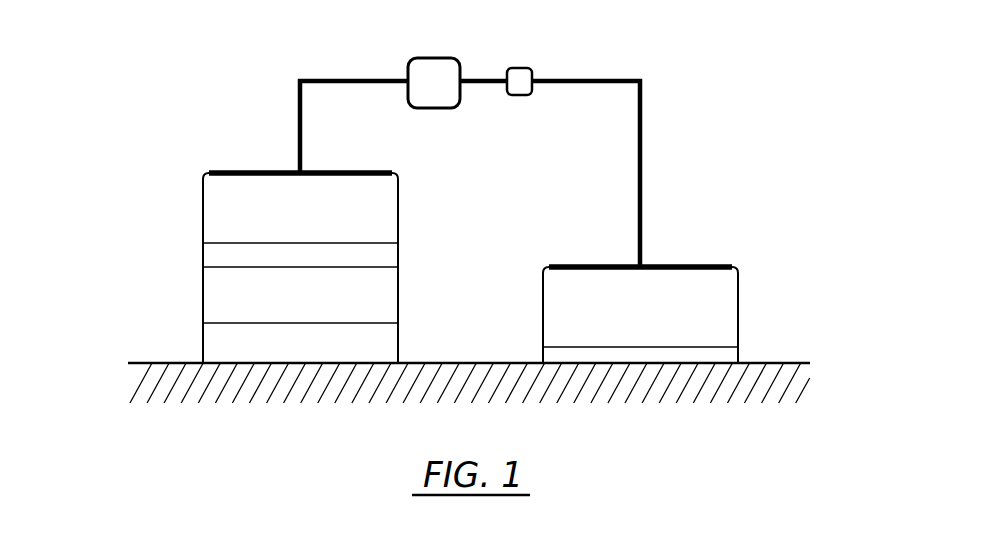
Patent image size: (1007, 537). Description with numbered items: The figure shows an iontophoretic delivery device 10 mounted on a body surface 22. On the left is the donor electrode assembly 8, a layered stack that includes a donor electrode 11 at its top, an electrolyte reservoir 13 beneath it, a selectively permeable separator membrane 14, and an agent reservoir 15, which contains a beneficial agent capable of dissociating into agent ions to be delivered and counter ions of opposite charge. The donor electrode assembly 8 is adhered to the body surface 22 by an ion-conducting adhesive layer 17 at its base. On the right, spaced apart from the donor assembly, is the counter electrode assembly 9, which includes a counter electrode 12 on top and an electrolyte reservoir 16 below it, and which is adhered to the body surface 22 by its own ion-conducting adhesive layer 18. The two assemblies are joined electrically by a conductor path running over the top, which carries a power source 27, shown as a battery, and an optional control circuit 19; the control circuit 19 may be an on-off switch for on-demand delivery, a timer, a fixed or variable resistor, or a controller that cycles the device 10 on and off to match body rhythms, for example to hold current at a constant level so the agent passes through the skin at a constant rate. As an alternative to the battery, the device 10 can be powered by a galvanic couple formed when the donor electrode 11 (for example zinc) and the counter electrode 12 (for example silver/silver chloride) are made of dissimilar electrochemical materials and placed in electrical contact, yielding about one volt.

The donor electrode assembly 8 is at (203, 162).
The counter electrode assembly 9 is at (734, 257).
The device 10 is at (300, 70).
The donor electrode 11 is at (277, 170).
The counter electrode 12 is at (668, 263).
The electrolyte reservoir 13 is at (258, 205).
The selectively permeable separator membrane 14 is at (258, 257).
The agent reservoir 15 is at (272, 287).
The electrolyte reservoir 16 is at (658, 313).
The ion-conducting adhesive layer 17 is at (272, 343).
The ion-conducting adhesive layer 18 is at (693, 356).
The control circuit 19 is at (523, 68).
The body surface 22 is at (752, 395).
The power source 27 is at (422, 58).